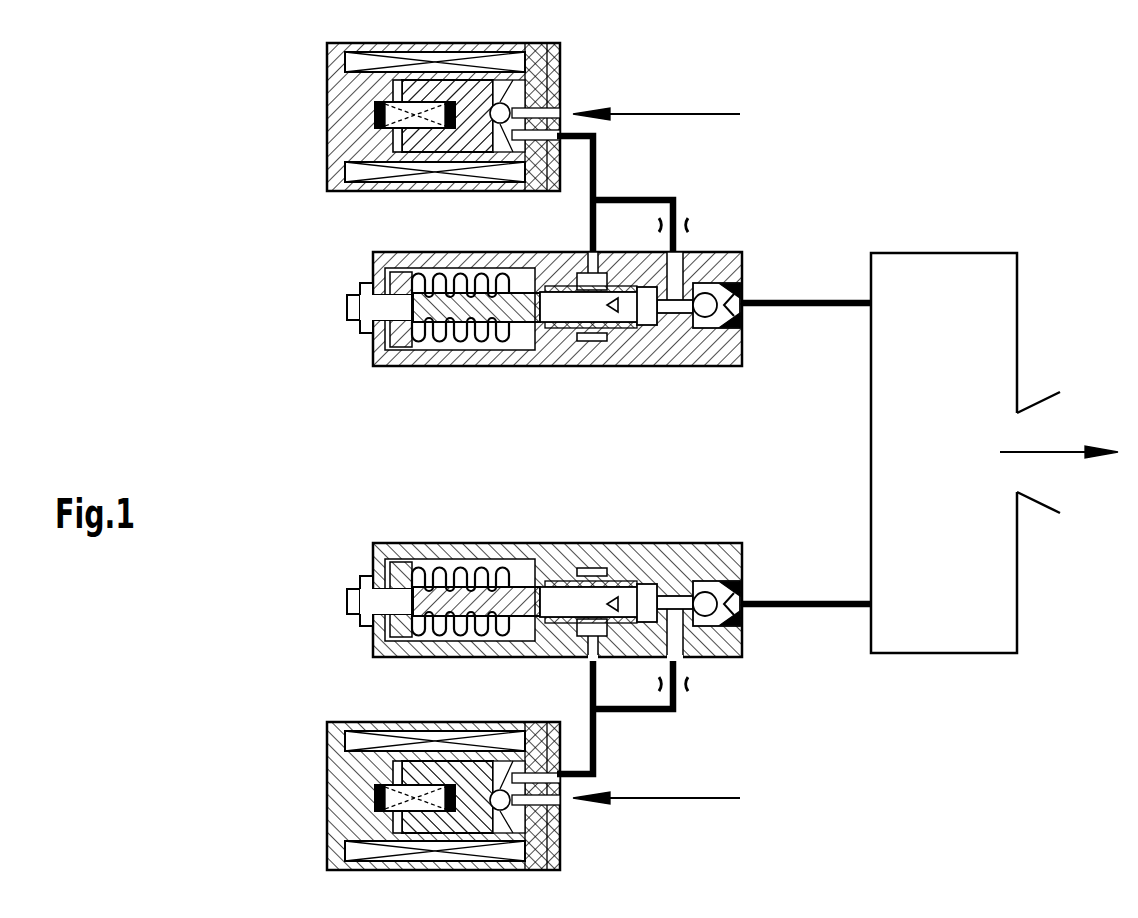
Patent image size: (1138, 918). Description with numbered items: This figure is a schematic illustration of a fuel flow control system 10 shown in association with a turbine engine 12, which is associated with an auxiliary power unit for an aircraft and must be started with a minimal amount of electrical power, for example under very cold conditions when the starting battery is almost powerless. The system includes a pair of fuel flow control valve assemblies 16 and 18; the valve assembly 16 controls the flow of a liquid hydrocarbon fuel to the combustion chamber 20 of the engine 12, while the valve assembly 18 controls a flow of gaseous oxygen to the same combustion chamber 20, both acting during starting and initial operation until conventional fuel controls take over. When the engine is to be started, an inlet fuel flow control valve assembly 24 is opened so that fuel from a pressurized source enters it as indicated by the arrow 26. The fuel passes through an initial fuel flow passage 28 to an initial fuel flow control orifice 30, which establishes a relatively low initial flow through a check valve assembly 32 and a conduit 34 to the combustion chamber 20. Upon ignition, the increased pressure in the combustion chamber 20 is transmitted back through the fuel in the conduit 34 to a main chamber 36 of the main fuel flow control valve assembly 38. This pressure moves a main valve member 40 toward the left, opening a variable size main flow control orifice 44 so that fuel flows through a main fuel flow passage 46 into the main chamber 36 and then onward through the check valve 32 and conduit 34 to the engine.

The fuel flow control system 10 is at (106, 108).
The turbine engine 12 is at (969, 236).
The fuel flow control valve assembly 16 is at (162, 272).
The fuel flow control valve assembly 18 is at (284, 693).
The combustion chamber 20 is at (955, 318).
The inlet fuel flow control valve assembly 24 is at (288, 108).
The arrow 26 is at (657, 112).
The initial fuel flow passage 28 is at (630, 198).
The initial fuel flow control orifice 30 is at (692, 226).
The check valve assembly 32 is at (742, 288).
The conduit 34 is at (807, 308).
The main chamber 36 is at (641, 322).
The main fuel flow control valve assembly 38 is at (317, 340).
The main valve member 40 is at (561, 318).
The variable size main flow control orifice 44 is at (620, 312).
The main fuel flow passage 46 is at (592, 216).